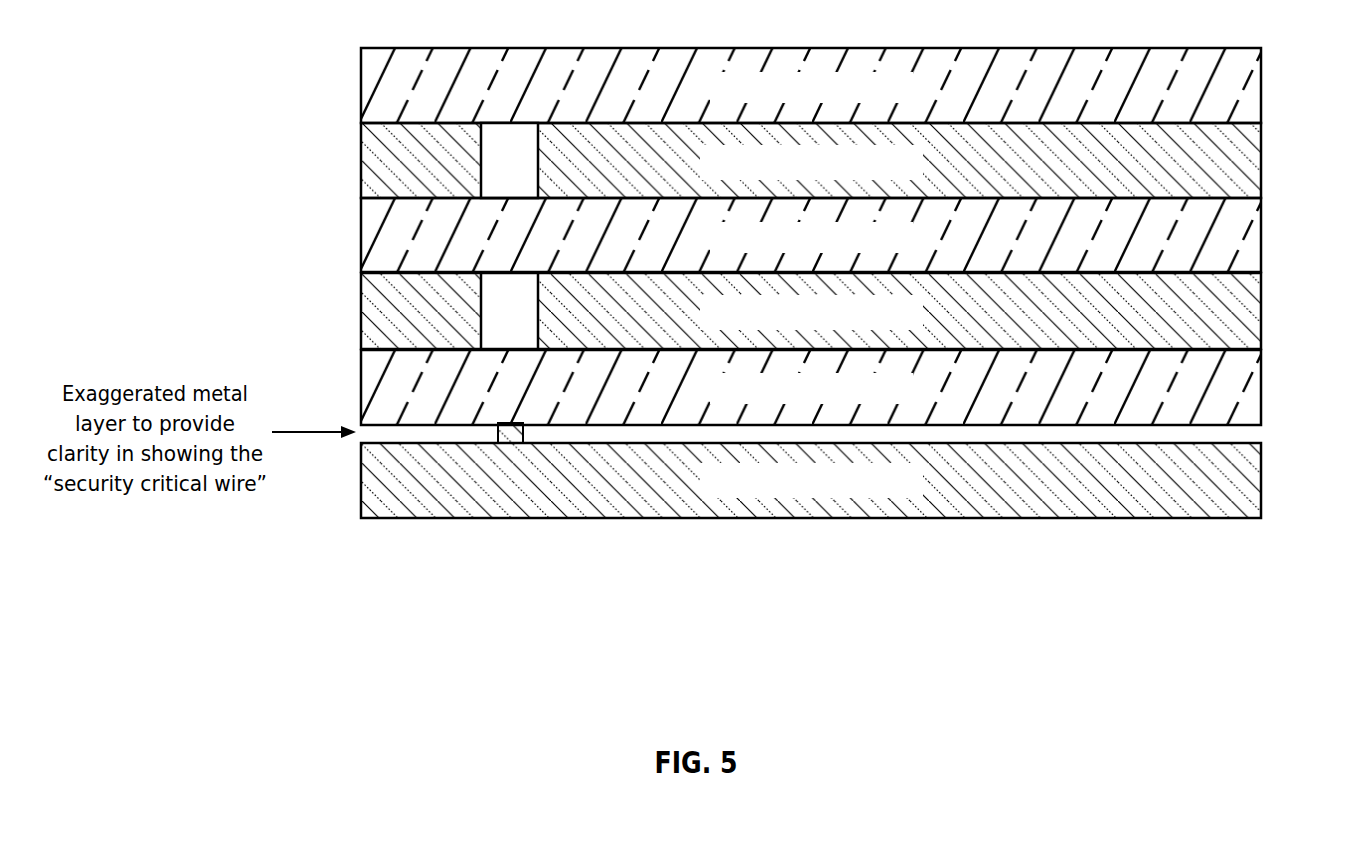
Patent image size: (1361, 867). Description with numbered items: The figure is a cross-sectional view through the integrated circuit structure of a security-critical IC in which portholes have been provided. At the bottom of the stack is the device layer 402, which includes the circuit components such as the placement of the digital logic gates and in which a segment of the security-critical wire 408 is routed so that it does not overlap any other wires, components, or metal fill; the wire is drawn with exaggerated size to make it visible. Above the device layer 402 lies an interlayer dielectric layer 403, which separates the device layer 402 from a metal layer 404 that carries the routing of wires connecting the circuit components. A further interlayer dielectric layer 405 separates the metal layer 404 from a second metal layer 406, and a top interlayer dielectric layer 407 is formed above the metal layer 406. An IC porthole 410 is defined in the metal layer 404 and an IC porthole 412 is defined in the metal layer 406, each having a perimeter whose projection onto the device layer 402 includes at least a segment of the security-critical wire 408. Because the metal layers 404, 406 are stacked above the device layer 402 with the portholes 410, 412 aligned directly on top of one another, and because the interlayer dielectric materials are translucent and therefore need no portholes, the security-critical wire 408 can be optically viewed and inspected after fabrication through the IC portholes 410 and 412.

The device layer 402 is at (1262, 477).
The interlayer dielectric layer 403 is at (1262, 386).
The metal layer 404 is at (1262, 310).
The interlayer dielectric layer 405 is at (1262, 233).
The metal layer 406 is at (1262, 158).
The interlayer dielectric layer 407 is at (1262, 85).
The security-critical wire 408 is at (517, 440).
The IC porthole 410 is at (512, 312).
The IC porthole 412 is at (513, 163).